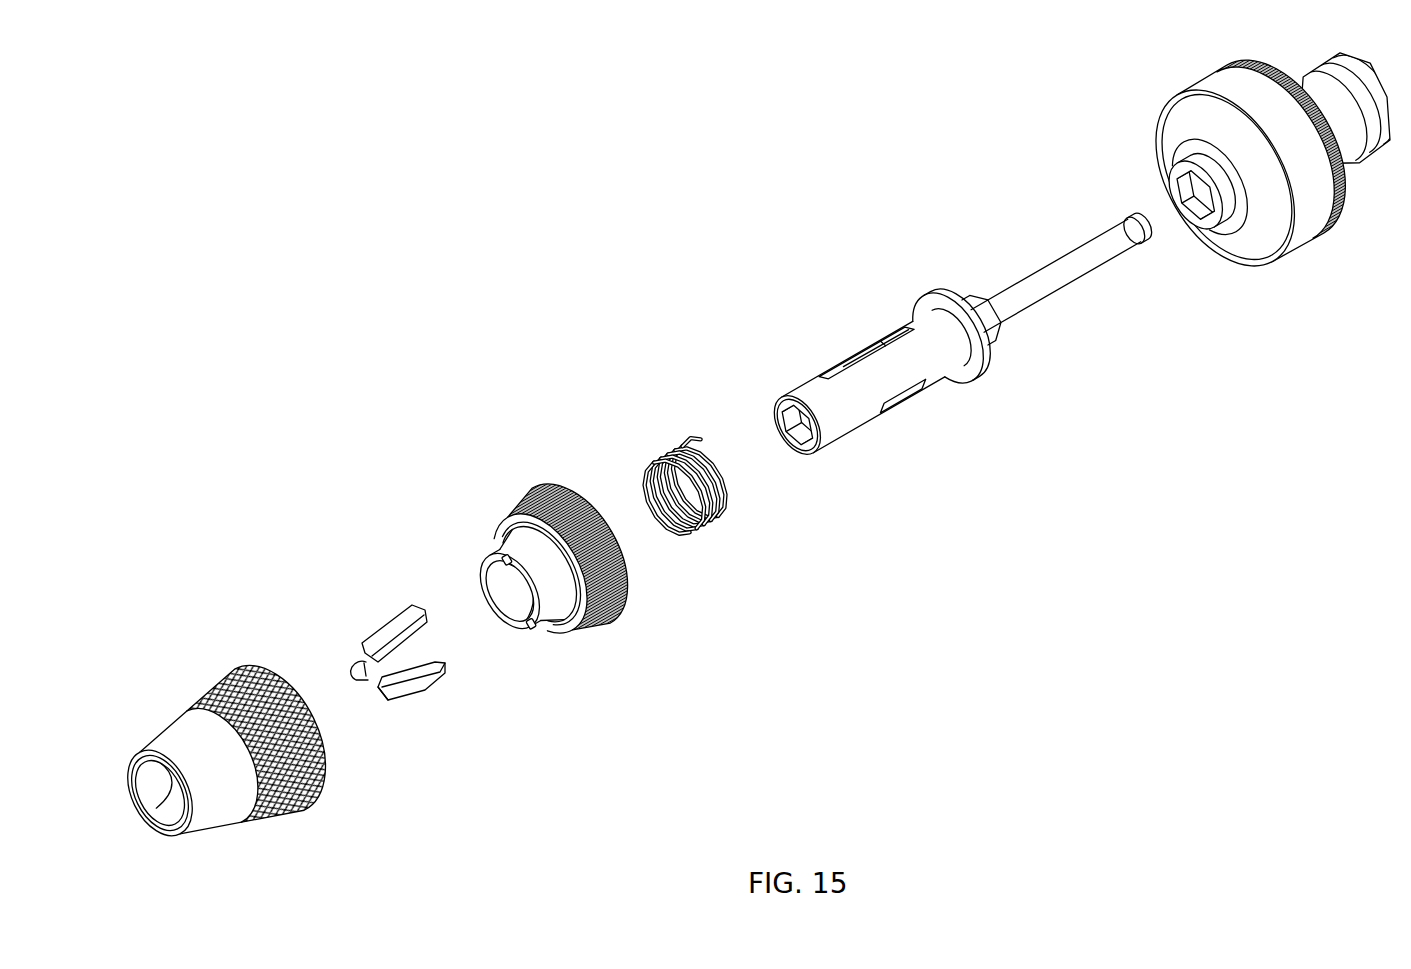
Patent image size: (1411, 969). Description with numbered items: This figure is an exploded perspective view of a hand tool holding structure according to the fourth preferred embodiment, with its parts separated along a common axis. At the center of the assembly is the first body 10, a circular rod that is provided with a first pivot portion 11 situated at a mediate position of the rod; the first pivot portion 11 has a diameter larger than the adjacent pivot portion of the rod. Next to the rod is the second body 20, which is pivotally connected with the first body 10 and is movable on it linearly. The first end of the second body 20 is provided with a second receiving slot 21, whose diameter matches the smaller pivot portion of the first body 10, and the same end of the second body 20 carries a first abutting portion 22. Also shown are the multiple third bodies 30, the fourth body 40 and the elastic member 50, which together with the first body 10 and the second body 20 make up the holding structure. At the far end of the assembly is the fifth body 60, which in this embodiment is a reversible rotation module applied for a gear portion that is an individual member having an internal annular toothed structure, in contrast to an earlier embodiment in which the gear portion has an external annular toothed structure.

The first body 10 is at (977, 363).
The first pivot portion 11 is at (943, 300).
The second body 20 is at (593, 622).
The second receiving slot 21 is at (490, 575).
The first abutting portion 22 is at (503, 555).
The third bodies 30 is at (388, 623).
The fourth body 40 is at (168, 728).
The elastic member 50 is at (710, 520).
The fifth body 60 is at (1310, 222).